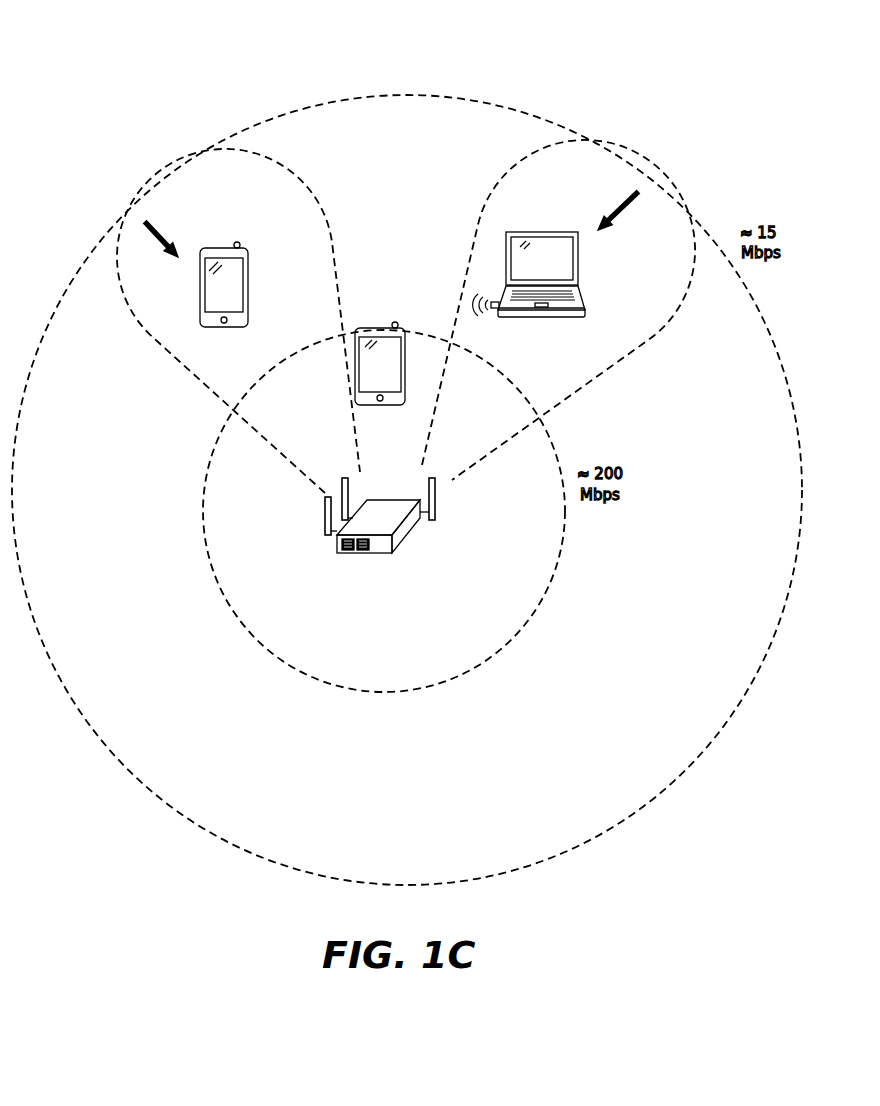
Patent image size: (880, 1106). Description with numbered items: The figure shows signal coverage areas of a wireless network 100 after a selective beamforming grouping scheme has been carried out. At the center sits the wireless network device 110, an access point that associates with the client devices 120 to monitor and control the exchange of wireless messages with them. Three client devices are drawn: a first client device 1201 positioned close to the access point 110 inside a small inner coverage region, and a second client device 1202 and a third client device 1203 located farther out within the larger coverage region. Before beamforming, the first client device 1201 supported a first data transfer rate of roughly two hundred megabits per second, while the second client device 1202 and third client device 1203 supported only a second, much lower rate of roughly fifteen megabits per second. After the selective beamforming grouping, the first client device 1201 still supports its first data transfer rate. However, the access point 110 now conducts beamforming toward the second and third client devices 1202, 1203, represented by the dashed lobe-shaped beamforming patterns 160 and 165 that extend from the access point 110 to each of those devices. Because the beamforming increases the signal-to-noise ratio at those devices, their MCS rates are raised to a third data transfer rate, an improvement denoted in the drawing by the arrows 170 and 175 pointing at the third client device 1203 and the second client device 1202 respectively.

The wireless network 100 is at (188, 100).
The wireless network device 110 is at (385, 503).
The client devices 120 is at (427, 318).
The first client device 1201 is at (376, 327).
The second client device 1202 is at (580, 293).
The third client device 1203 is at (248, 270).
The beamforming pattern 160 is at (205, 378).
The beamforming pattern 165 is at (662, 328).
The arrow 170 is at (156, 244).
The arrow 175 is at (641, 200).